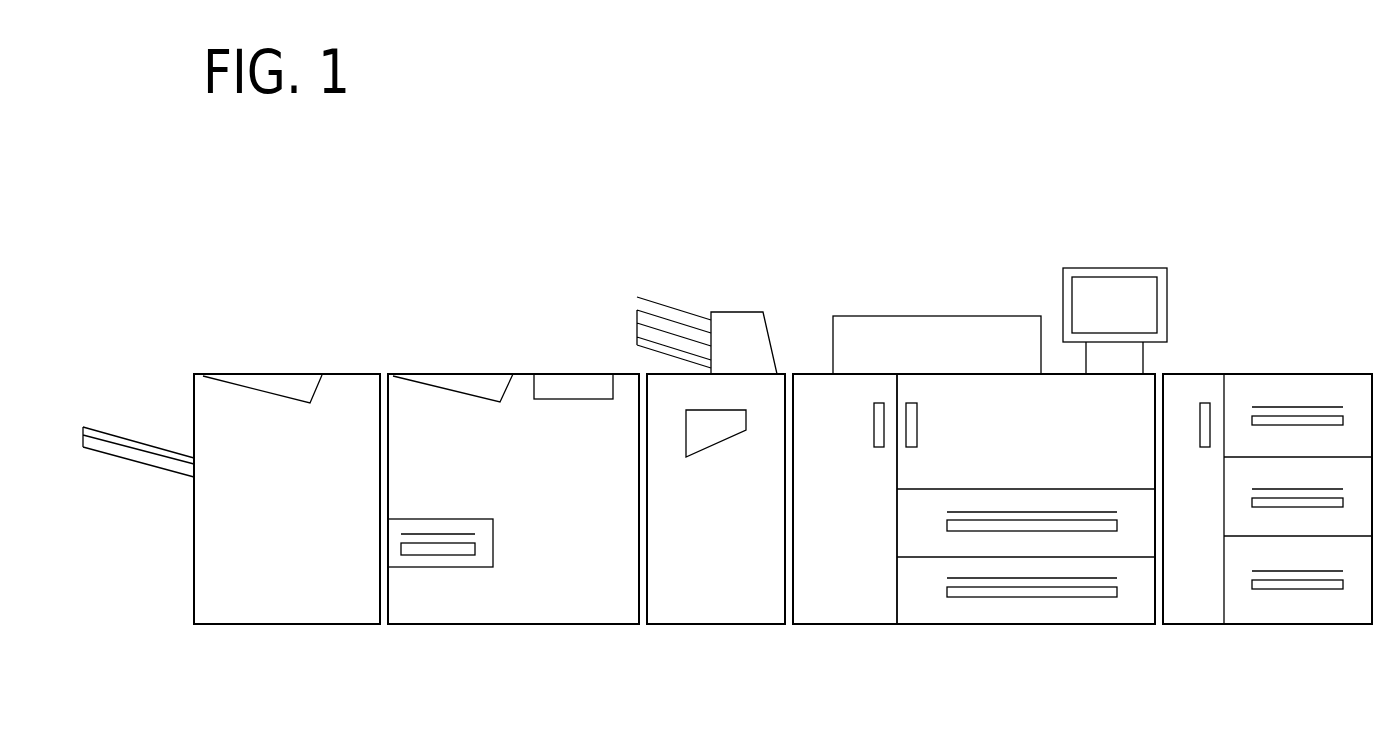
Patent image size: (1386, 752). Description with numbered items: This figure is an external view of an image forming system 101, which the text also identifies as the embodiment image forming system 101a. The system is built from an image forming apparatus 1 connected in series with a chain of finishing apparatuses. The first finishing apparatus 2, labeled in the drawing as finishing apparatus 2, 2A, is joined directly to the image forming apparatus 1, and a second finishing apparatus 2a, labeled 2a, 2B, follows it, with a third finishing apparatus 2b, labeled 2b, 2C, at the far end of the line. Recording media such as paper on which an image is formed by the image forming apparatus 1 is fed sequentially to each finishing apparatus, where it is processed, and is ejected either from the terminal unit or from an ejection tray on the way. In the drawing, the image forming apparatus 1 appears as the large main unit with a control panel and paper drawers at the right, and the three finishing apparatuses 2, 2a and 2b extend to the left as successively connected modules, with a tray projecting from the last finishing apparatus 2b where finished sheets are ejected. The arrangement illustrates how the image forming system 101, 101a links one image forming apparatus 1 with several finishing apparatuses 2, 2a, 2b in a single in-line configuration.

The image forming system 101 is at (727, 408).
The image forming system 101a is at (835, 157).
The image forming apparatus 1 is at (1068, 624).
The finishing apparatus 2 is at (711, 493).
The post-processing apparatus 2A is at (718, 624).
The finishing apparatus 2a is at (513, 531).
The post-processing apparatus 2B is at (508, 624).
The finishing apparatus 2b is at (231, 531).
The post-processing apparatus 2C is at (288, 624).